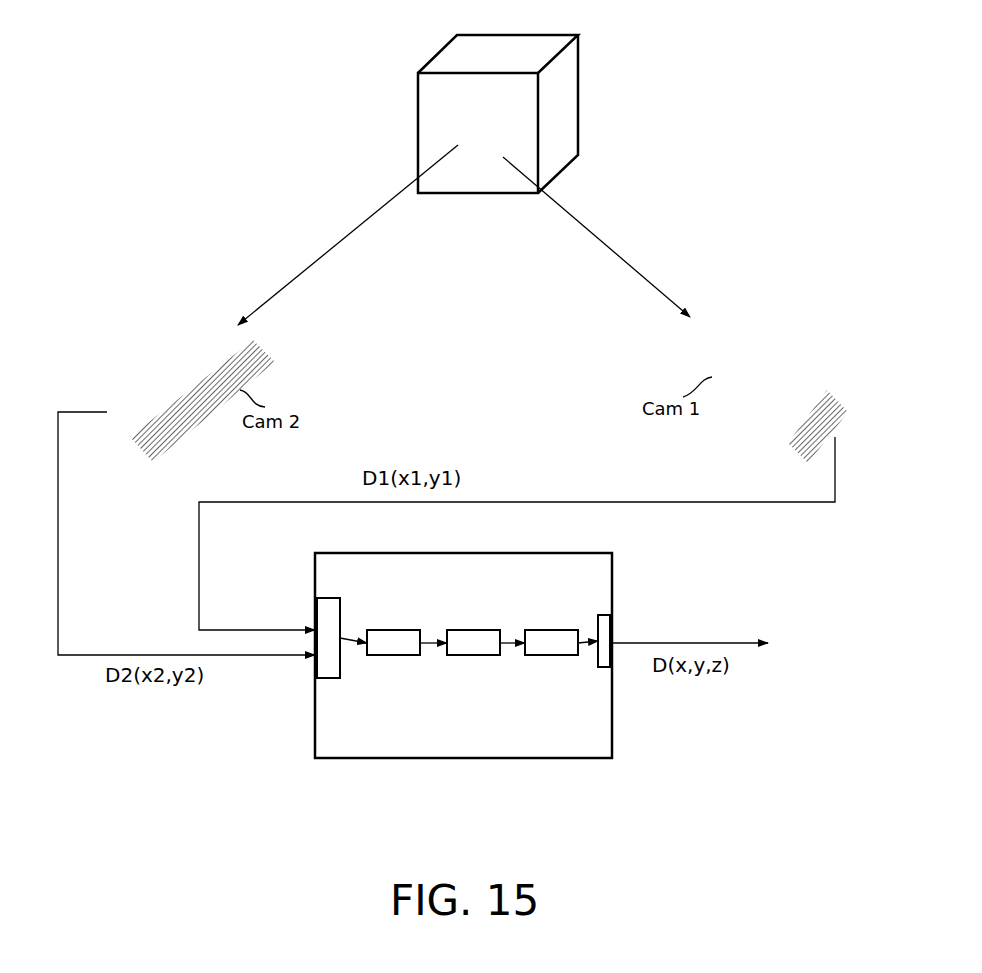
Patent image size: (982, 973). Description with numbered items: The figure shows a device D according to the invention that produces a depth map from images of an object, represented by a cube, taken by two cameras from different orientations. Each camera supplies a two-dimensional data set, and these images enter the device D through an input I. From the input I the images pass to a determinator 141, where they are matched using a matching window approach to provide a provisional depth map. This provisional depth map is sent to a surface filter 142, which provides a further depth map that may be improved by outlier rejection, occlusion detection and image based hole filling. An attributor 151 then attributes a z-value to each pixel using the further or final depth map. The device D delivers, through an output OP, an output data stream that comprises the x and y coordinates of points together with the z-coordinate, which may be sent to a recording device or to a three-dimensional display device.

The determinator 141 is at (393, 656).
The surface filter 142 is at (472, 656).
The attributor 151 is at (550, 656).
The input I is at (325, 679).
The output OP is at (605, 668).
The device D is at (365, 759).